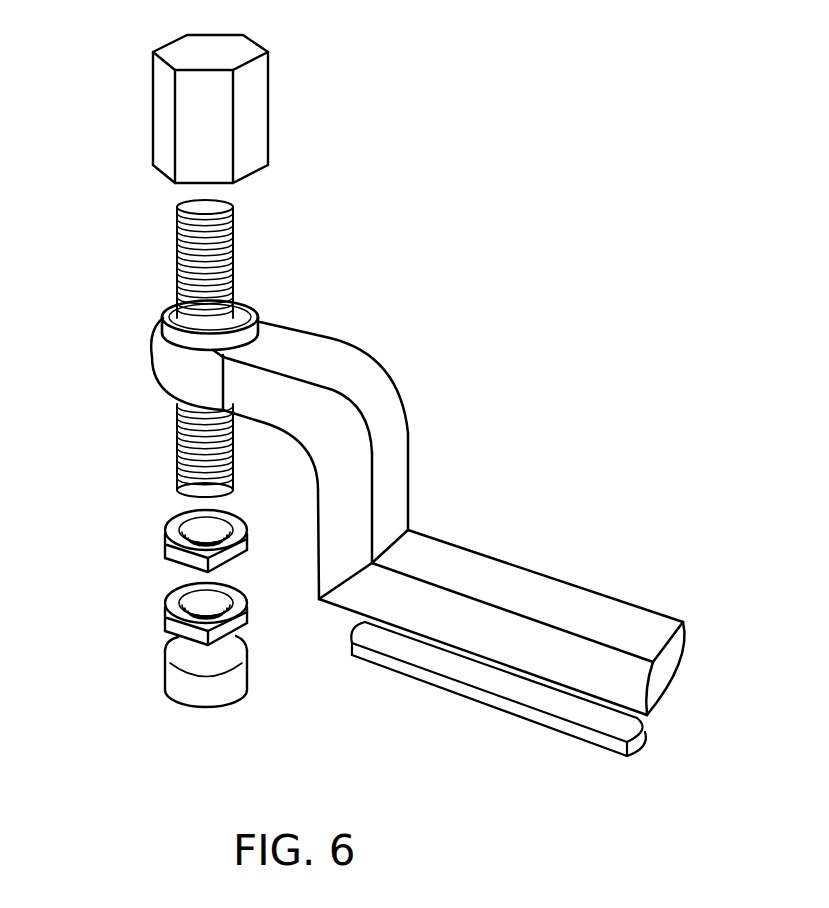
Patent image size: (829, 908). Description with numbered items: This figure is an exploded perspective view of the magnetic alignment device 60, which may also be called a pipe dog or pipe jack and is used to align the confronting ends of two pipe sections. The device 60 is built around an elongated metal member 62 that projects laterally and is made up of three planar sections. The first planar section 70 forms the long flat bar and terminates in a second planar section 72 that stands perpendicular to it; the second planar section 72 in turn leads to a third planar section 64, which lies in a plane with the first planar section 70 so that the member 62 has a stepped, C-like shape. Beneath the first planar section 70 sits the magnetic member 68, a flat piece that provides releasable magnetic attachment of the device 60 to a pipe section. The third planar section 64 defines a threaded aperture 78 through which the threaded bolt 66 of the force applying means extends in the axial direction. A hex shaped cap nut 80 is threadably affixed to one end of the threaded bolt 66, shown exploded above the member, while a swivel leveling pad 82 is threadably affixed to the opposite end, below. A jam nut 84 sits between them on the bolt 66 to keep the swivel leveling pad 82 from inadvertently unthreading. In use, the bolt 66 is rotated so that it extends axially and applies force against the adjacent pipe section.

The magnetic alignment device 60 is at (516, 304).
The elongated metal member 62 is at (388, 370).
The third planar section 64 is at (308, 345).
The threaded bolt 66 is at (187, 452).
The magnetic member 68 is at (522, 712).
The first planar section 70 is at (542, 585).
The second planar section 72 is at (403, 452).
The threaded aperture 78 is at (170, 312).
The hex shaped cap nut 80 is at (260, 82).
The swivel leveling pad 82 is at (167, 686).
The jam nut 84 is at (167, 550).